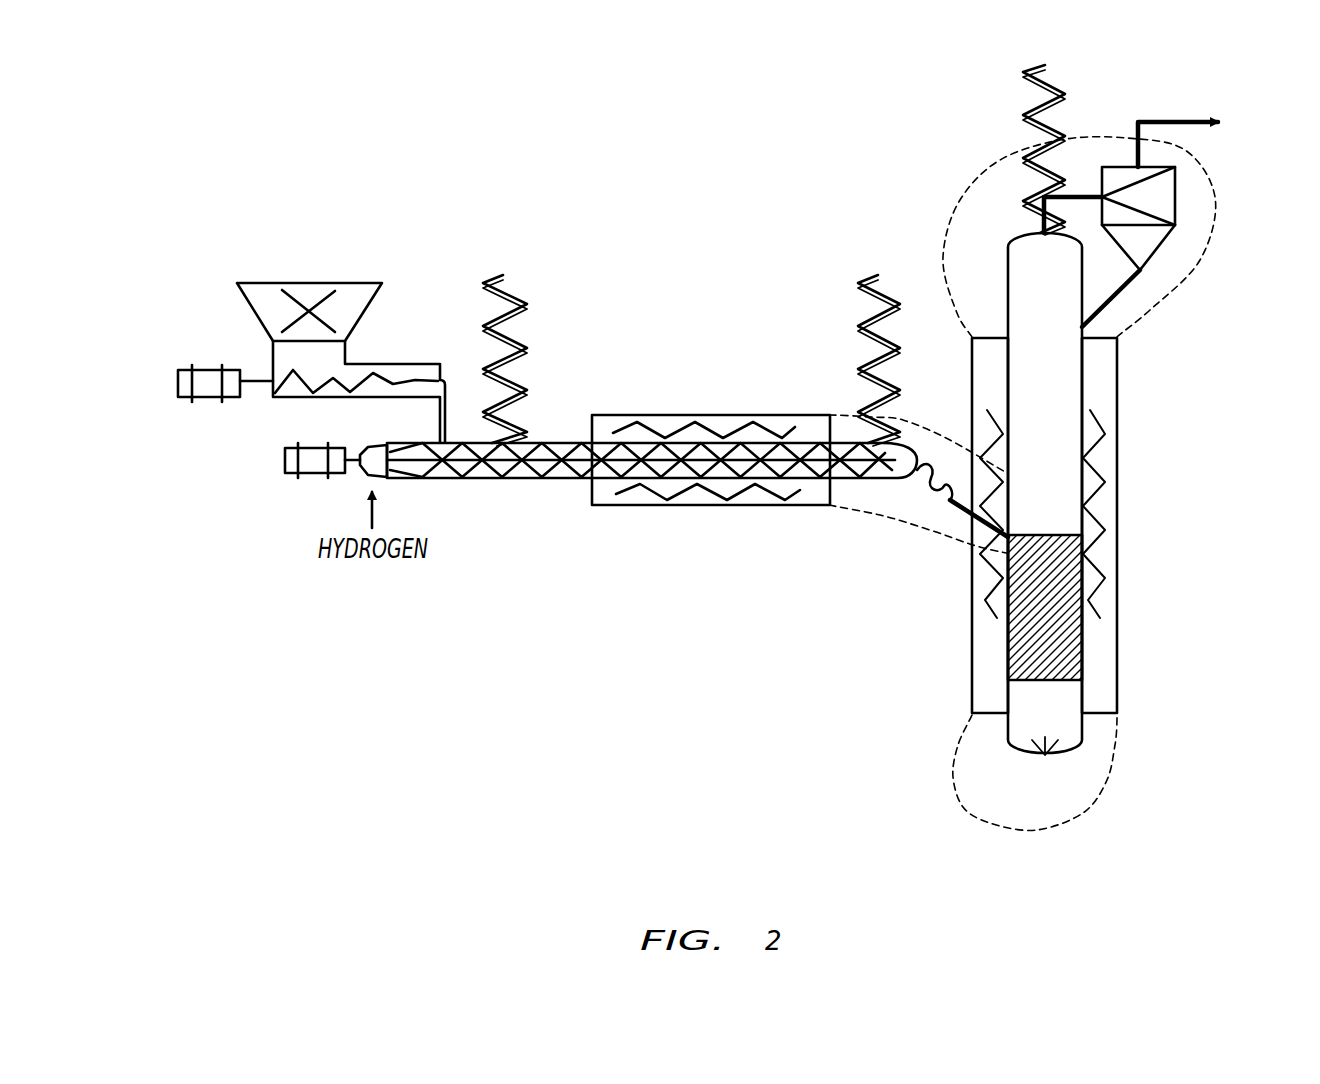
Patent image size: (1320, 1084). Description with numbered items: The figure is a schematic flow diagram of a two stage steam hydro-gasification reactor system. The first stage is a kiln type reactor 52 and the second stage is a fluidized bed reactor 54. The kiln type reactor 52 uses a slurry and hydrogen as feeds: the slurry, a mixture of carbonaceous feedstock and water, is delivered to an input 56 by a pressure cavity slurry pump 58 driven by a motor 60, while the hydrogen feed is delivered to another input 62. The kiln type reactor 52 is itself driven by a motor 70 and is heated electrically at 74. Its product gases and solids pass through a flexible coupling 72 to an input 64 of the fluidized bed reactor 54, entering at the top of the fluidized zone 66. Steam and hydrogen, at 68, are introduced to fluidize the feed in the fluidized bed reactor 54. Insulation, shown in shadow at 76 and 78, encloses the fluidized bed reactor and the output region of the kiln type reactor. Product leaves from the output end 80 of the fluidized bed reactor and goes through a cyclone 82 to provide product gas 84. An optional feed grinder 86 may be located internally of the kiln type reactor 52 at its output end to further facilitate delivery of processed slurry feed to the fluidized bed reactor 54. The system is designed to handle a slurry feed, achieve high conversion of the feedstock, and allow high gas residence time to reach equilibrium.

The kiln type reactor 52 is at (535, 478).
The fluidized bed reactor 54 is at (1050, 338).
The input 56 is at (448, 442).
The pressure cavity slurry pump 58 is at (265, 302).
The motor 60 is at (177, 383).
The input 62 is at (373, 462).
The input 64 is at (1008, 537).
The fluidized zone 66 is at (1033, 660).
The steam and hydrogen 68 is at (1045, 764).
The motor 70 is at (288, 460).
The flexible coupling 72 is at (931, 504).
The electrical heating 74 is at (592, 415).
The insulation 76 is at (960, 232).
The insulation 78 is at (852, 425).
The output end 80 is at (1018, 233).
The cyclone 82 is at (1175, 197).
The product gas 84 is at (1220, 127).
The feed grinder 86 is at (857, 484).